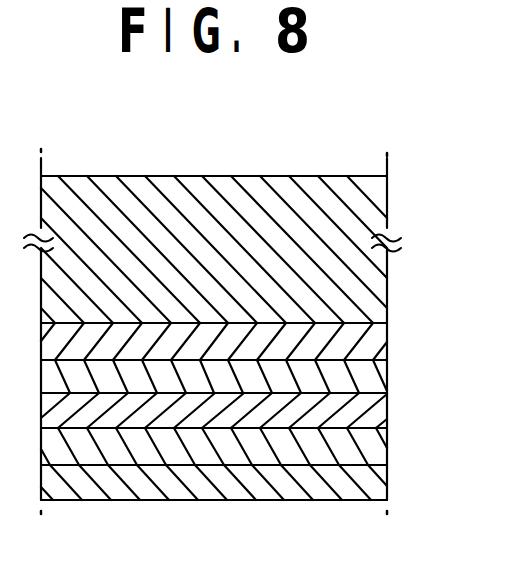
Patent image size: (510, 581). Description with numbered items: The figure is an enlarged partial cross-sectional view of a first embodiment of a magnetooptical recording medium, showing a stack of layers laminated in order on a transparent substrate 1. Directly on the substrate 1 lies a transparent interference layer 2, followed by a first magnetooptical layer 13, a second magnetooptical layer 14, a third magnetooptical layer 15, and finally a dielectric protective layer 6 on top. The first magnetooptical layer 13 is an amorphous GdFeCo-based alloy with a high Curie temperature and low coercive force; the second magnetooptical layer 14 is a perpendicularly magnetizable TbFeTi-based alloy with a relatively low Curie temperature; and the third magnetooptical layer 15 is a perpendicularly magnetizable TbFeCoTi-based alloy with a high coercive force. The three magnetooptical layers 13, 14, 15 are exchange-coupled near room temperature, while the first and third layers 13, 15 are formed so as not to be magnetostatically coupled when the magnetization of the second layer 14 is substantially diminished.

The transparent substrate 1 is at (218, 178).
The transparent interference layer 2 is at (373, 342).
The first magnetooptical layer 13 is at (373, 380).
The second magnetooptical layer 14 is at (380, 414).
The third magnetooptical layer 15 is at (380, 452).
The dielectric protective layer 6 is at (213, 500).